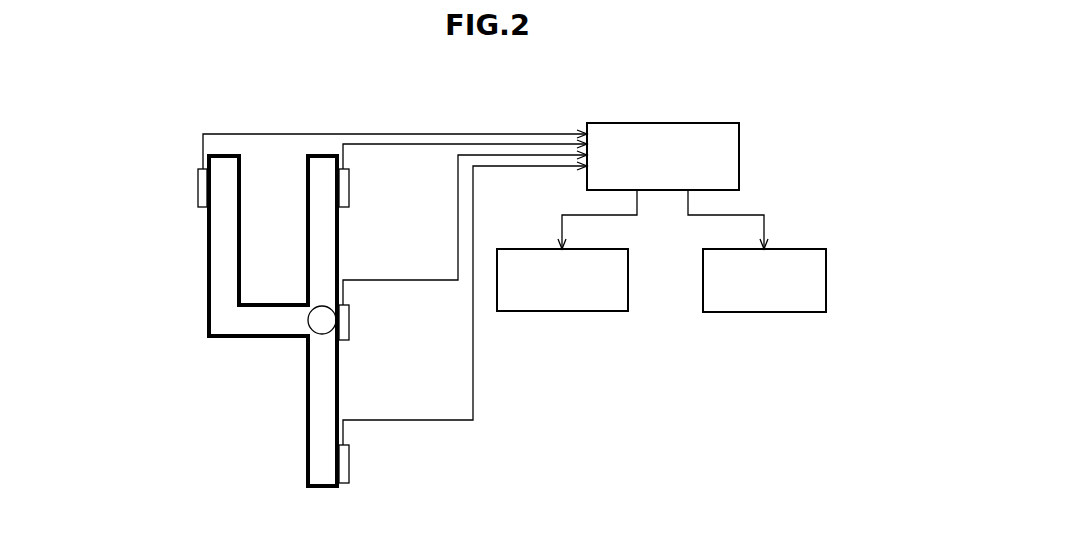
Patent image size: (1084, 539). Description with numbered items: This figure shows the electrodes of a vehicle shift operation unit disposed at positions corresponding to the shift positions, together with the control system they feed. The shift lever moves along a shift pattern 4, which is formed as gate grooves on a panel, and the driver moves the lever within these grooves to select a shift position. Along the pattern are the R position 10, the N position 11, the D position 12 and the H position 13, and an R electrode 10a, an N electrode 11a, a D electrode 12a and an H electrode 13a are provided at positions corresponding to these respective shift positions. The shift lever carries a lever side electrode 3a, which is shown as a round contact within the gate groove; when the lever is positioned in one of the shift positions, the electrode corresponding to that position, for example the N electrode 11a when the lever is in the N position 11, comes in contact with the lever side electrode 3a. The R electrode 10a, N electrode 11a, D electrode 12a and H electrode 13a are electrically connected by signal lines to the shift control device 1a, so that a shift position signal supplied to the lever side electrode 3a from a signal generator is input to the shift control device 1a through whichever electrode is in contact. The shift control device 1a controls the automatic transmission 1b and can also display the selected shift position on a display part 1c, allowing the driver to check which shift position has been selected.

The shift control device 1a is at (739, 148).
The automatic transmission 1b is at (628, 270).
The display part 1c is at (826, 268).
The lever side electrode 3a is at (318, 322).
The shift pattern 4 is at (264, 304).
The R position 10 is at (376, 189).
The R electrode 10a is at (343, 207).
The N position 11 is at (374, 324).
The N electrode 11a is at (343, 340).
The D position 12 is at (374, 465).
The D electrode 12a is at (343, 483).
The H position 13 is at (168, 184).
The H electrode 13a is at (203, 208).